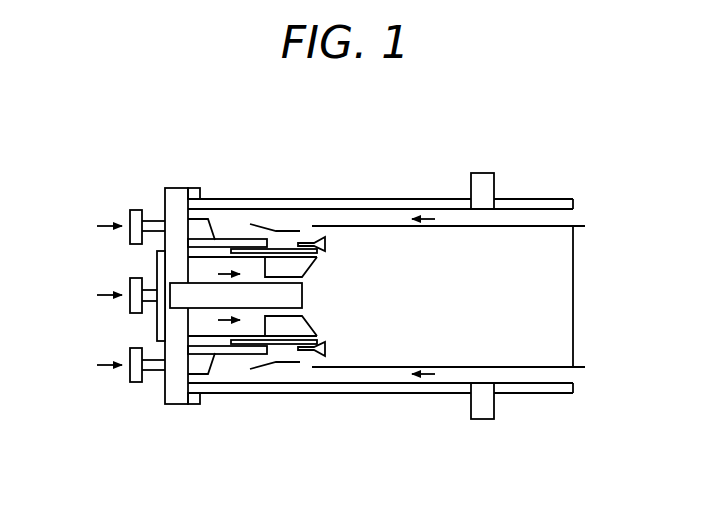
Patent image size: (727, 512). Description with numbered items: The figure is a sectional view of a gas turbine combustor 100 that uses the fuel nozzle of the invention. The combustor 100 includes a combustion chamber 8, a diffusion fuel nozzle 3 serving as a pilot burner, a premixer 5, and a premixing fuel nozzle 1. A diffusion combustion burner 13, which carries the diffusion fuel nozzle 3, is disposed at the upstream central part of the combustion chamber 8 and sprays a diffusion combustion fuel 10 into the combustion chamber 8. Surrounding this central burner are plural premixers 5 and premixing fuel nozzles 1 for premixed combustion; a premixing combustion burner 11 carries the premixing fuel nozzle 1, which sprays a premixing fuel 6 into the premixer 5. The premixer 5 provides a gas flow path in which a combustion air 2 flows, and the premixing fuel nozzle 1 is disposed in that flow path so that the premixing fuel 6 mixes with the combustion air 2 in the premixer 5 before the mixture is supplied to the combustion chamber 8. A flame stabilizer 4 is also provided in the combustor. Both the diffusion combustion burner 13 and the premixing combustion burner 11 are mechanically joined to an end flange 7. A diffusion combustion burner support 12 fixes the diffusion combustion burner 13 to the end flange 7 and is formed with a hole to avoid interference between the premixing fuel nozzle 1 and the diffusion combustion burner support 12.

The gas turbine combustor 100 is at (573, 278).
The premixing fuel nozzle 1 is at (233, 238).
The combustion air 2 is at (425, 262).
The diffusion fuel nozzle 3 is at (302, 302).
The flame stabilizer 4 is at (327, 235).
The premixer 5 is at (290, 230).
The premixing fuel 6 is at (97, 226).
The end flange 7 is at (177, 393).
The combustion chamber 8 is at (517, 258).
The diffusion combustion fuel 10 is at (97, 295).
The premixing combustion burner 11 is at (278, 352).
The diffusion combustion burner support 12 is at (200, 232).
The diffusion combustion burner 13 is at (292, 328).